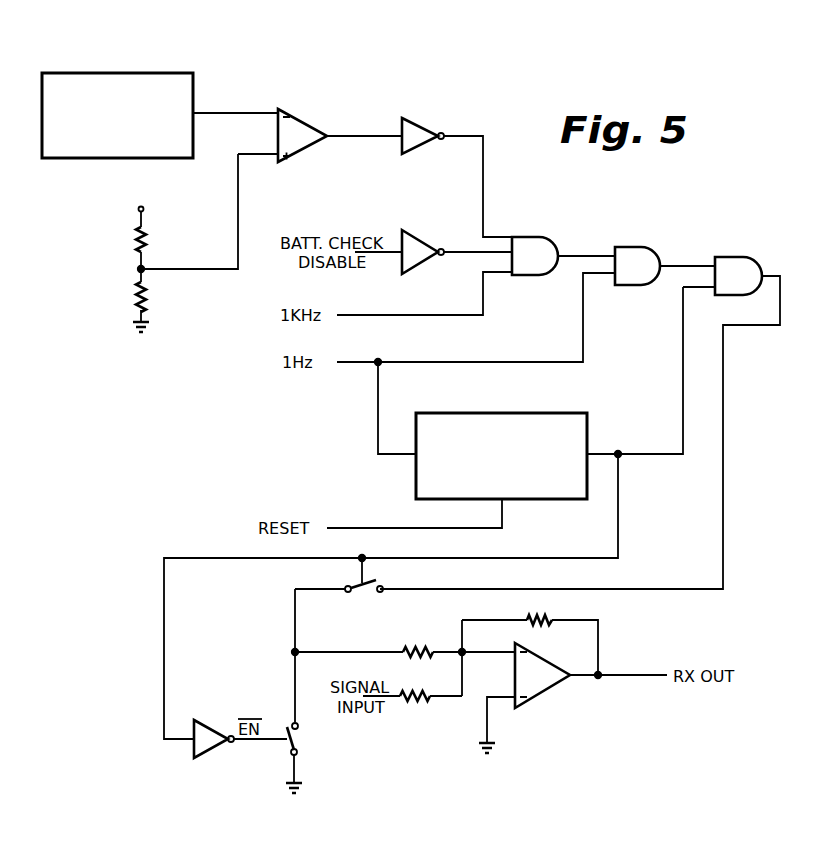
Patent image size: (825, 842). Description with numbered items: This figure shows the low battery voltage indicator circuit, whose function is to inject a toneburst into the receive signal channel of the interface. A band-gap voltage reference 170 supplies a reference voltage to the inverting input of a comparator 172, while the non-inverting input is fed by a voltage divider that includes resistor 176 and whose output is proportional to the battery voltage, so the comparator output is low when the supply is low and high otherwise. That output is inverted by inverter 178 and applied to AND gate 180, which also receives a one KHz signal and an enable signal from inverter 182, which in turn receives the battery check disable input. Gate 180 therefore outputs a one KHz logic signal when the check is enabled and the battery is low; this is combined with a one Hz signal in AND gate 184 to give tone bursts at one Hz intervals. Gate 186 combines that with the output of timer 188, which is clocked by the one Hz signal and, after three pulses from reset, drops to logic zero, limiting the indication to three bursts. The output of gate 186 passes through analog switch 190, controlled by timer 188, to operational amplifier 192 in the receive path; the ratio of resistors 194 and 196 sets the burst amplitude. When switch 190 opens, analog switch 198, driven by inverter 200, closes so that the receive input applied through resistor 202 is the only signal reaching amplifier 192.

The band-gap voltage reference 170 is at (192, 73).
The comparator 172 is at (305, 128).
The resistor 176 is at (137, 298).
The inverter 178 is at (425, 122).
The AND gate 180 is at (540, 246).
The inverter 182 is at (420, 231).
The AND gate 184 is at (638, 252).
The AND gate 186 is at (737, 263).
The timer 188 is at (590, 428).
The analog switch 190 is at (384, 583).
The operational amplifier 192 is at (540, 700).
The resistor 194 is at (553, 618).
The resistor 196 is at (400, 648).
The analog switch 198 is at (285, 750).
The inverter 200 is at (205, 760).
The resistor 202 is at (417, 705).